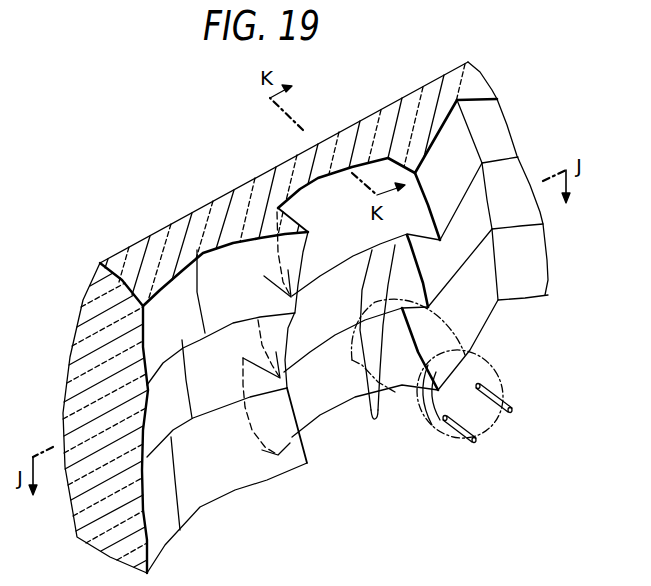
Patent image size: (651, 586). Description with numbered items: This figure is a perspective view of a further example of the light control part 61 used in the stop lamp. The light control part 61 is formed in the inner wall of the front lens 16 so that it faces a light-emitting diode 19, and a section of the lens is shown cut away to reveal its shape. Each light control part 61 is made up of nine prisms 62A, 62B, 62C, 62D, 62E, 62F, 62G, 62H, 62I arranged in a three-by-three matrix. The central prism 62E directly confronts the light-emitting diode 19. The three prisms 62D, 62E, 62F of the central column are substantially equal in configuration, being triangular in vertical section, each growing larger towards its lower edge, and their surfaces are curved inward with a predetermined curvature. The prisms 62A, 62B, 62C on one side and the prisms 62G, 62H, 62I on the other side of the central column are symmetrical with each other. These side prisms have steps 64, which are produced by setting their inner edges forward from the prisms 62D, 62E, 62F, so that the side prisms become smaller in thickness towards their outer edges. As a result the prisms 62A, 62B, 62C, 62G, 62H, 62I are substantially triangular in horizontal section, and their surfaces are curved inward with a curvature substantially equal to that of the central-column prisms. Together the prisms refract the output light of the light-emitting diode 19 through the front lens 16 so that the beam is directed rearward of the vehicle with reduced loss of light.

The front lens 16 is at (324, 162).
The light control part 61 is at (185, 418).
The prism 62A is at (225, 250).
The prism 62B is at (205, 309).
The prism 62C is at (227, 478).
The prism 62D is at (367, 165).
The central prism 62E is at (332, 220).
The prism 62F is at (361, 396).
The prism 62G is at (506, 125).
The prism 62H is at (521, 201).
The prism 62I is at (488, 309).
The steps 64 is at (408, 345).
The light-emitting diode 19 is at (474, 394).